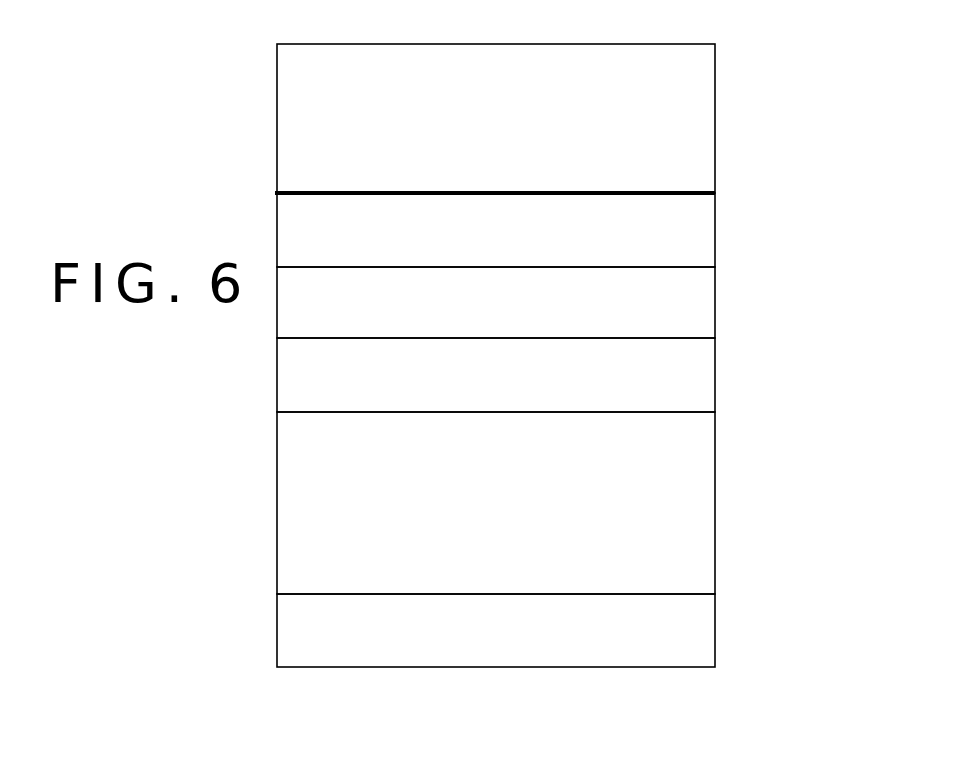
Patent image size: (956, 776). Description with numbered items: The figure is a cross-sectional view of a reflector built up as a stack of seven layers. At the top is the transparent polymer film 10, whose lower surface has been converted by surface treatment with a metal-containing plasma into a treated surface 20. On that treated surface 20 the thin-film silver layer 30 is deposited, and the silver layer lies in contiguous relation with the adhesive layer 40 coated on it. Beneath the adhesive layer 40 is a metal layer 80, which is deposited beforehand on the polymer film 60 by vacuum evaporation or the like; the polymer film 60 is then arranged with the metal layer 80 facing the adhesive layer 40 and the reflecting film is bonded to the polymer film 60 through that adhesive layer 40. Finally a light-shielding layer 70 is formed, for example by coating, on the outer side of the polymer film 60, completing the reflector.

The transparent polymer film 10 is at (703, 101).
The treated surface 20 is at (713, 191).
The thin-film silver layer 30 is at (703, 233).
The adhesive layer 40 is at (703, 307).
The metal layer 80 is at (703, 380).
The polymer film 60 is at (703, 502).
The light-shielding layer 70 is at (704, 637).